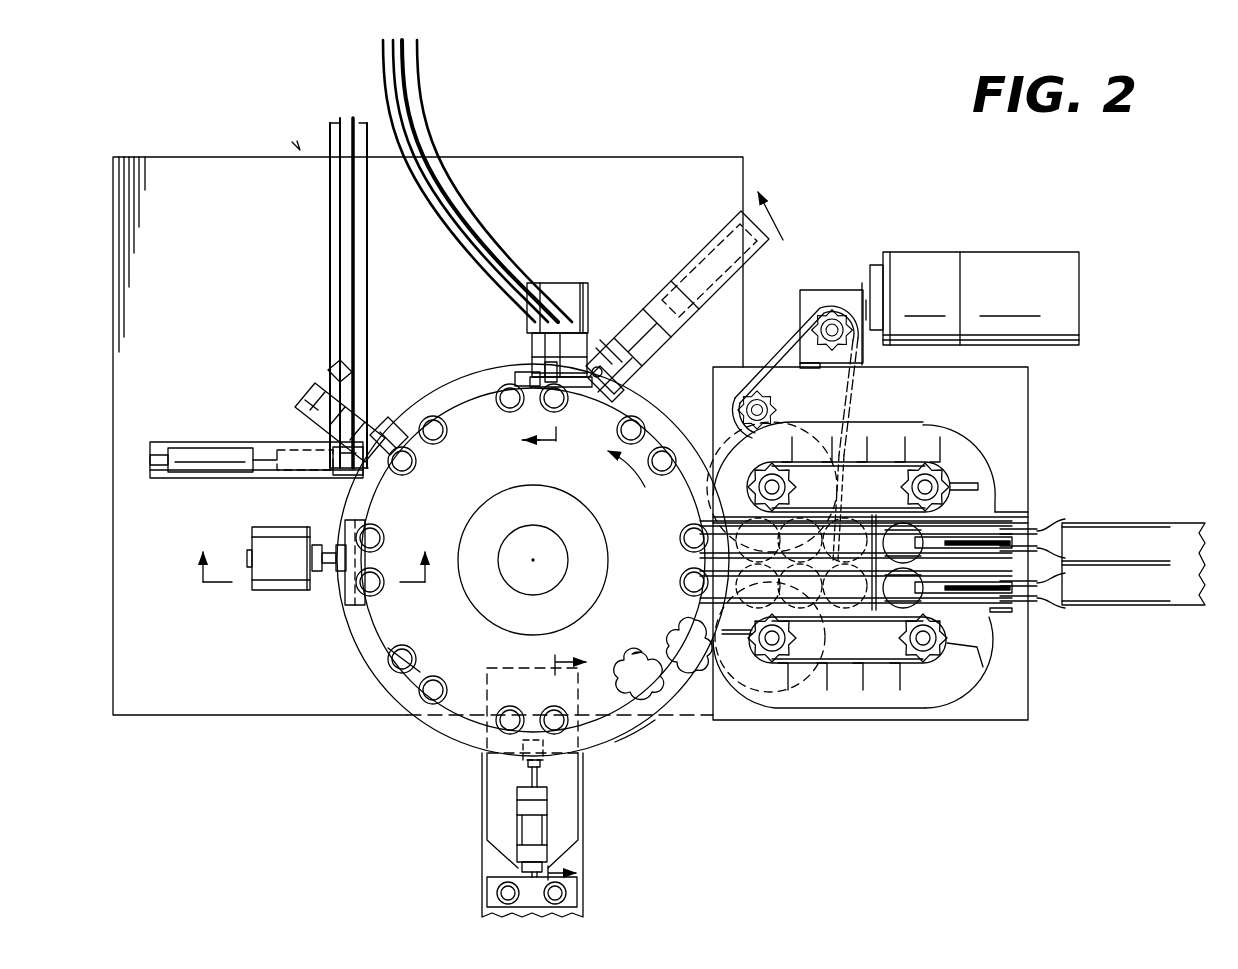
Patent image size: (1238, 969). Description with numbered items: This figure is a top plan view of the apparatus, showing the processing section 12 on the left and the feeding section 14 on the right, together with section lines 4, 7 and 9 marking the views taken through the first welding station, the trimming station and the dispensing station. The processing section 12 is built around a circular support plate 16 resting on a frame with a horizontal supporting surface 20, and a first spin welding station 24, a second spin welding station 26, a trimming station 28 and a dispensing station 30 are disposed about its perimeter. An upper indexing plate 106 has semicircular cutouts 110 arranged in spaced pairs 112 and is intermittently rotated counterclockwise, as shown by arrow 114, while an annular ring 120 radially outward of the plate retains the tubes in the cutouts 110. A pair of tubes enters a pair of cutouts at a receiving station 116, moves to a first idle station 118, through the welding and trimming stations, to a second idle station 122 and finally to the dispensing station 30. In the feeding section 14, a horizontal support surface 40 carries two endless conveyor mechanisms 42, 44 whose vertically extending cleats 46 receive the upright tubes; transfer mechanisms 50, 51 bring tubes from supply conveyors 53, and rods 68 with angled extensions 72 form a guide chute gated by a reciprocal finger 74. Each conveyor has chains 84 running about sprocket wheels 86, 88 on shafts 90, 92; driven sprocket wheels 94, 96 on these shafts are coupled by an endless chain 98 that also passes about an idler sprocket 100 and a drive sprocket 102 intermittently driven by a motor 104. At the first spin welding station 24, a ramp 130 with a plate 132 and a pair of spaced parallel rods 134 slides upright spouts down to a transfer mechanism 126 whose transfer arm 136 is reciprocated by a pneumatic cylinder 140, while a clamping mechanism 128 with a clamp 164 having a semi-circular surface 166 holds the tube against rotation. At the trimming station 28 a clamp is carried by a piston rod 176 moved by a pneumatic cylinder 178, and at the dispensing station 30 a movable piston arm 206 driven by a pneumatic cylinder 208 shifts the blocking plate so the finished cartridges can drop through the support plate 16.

The section line 4- 4 is at (664, 322).
The section line 7- 7 is at (311, 585).
The section line 9- 9 is at (577, 767).
The processing section 12 is at (294, 145).
The feeding section 14 is at (1010, 237).
The support plate 16 is at (622, 728).
The horizontal supporting surface 20 is at (222, 307).
The first spin welding station 24 is at (604, 272).
The second spin welding station 26 is at (385, 360).
The trimming station 28 is at (280, 654).
The dispensing station 30 is at (454, 749).
The horizontal support surface 40 is at (1018, 400).
The conveyor mechanism 42 is at (918, 460).
The conveyor mechanism 44 is at (880, 672).
The cleats 46 is at (832, 455).
The transfer mechanism 50 is at (1038, 596).
The transfer mechanism 51 is at (1034, 540).
The supply conveyors 53 is at (1180, 525).
The rods 68 is at (892, 612).
The extensions 72 is at (1030, 527).
The reciprocal finger 74 is at (1002, 608).
The chains 84 is at (962, 450).
The sprocket wheels 86 is at (797, 488).
The sprocket wheels 88 is at (970, 470).
The shaft 90 is at (757, 655).
The shaft 92 is at (700, 445).
The driven sprocket wheel 94 is at (808, 652).
The driven sprocket wheel 96 is at (820, 497).
The endless chain 98 is at (848, 393).
The idler sprocket 100 is at (775, 400).
The drive sprocket 102 is at (828, 322).
The motor 104 is at (1040, 289).
The upper indexing plate 106 is at (650, 616).
The semicircular cutouts 110 is at (640, 700).
The spaced pairs of cutouts 112 is at (682, 562).
The arrow 114 is at (625, 483).
The receiving station 116 is at (661, 652).
The first idle station 118 is at (658, 408).
The annular ring 120 is at (466, 380).
The second idle station 122 is at (405, 673).
The transfer mechanism 126 is at (262, 440).
The clamping mechanism 128 is at (570, 282).
The ramp 130 is at (430, 128).
The plate 132 is at (432, 158).
The rods 134 is at (401, 90).
The transfer arm 136 is at (342, 478).
The pneumatic cylinder 140 is at (200, 473).
The clamp 164 is at (528, 384).
The semi-circular surface 166 is at (522, 418).
The piston rod 176 is at (325, 598).
The pneumatic cylinder 178 is at (268, 583).
The movable piston arm 206 is at (547, 772).
The pneumatic cylinder 208 is at (548, 825).